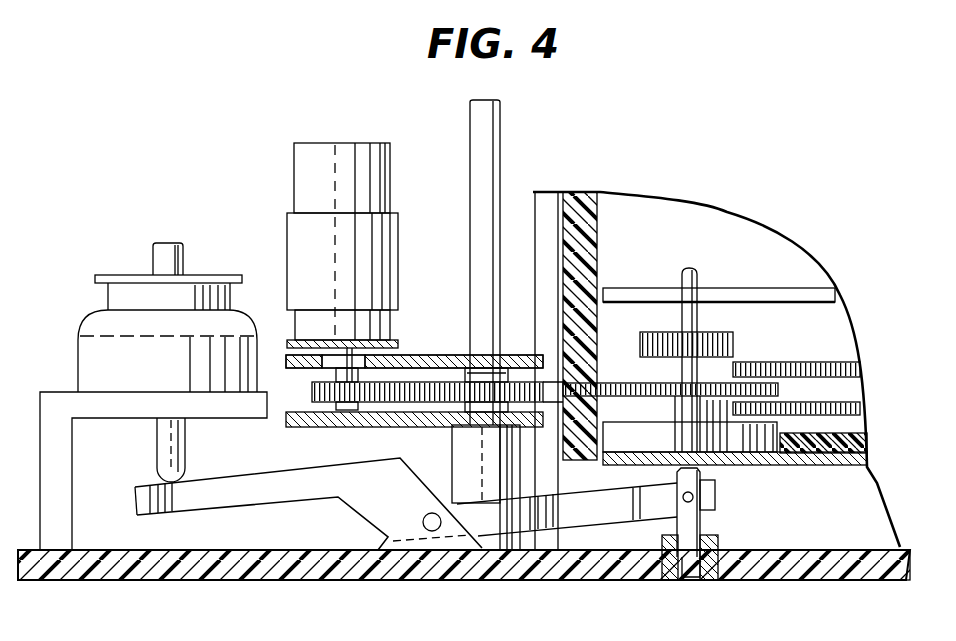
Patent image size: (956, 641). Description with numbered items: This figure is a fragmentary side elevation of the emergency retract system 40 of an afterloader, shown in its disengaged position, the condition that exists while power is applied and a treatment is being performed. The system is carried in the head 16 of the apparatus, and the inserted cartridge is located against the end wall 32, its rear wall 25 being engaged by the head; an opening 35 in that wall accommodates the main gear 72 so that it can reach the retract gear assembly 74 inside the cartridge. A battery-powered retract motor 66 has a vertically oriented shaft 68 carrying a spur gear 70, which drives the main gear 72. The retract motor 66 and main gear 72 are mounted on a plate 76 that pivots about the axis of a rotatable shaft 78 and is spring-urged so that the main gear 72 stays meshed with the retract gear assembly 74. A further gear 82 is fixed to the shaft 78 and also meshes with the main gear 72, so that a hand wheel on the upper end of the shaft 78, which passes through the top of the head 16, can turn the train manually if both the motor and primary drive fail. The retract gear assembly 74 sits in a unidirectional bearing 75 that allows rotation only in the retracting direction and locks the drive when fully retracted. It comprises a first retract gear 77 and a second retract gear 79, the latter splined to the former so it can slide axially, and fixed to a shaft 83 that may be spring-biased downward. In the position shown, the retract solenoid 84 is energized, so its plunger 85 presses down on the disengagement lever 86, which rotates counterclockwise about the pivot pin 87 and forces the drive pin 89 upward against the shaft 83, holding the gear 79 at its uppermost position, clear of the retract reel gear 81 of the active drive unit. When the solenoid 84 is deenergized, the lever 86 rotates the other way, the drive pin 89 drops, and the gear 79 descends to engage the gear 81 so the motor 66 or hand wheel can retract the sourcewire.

The head 16 is at (283, 568).
The rear wall 25 is at (586, 209).
The end wall 32 is at (551, 208).
The opening 35 is at (605, 414).
The emergency retract system 40 is at (692, 142).
The retract motor 66 is at (312, 165).
The shaft 68 is at (332, 347).
The spur gear 70 is at (327, 412).
The main gear 72 is at (401, 382).
The retract gear assembly 74 is at (718, 286).
The unidirectional bearing 75 is at (770, 455).
The plate 76 is at (441, 347).
The first retract gear 77 is at (636, 383).
The rotatable shaft 78 is at (481, 160).
The second retract gear 79 is at (735, 345).
The retract reel gear 81 is at (805, 362).
The further gear 82 is at (457, 428).
The shaft 83 is at (688, 268).
The retract solenoid 84 is at (103, 319).
The plunger 85 is at (186, 448).
The disengagement lever 86 is at (279, 488).
The pivot pin 87 is at (423, 521).
The drive pin 89 is at (692, 522).